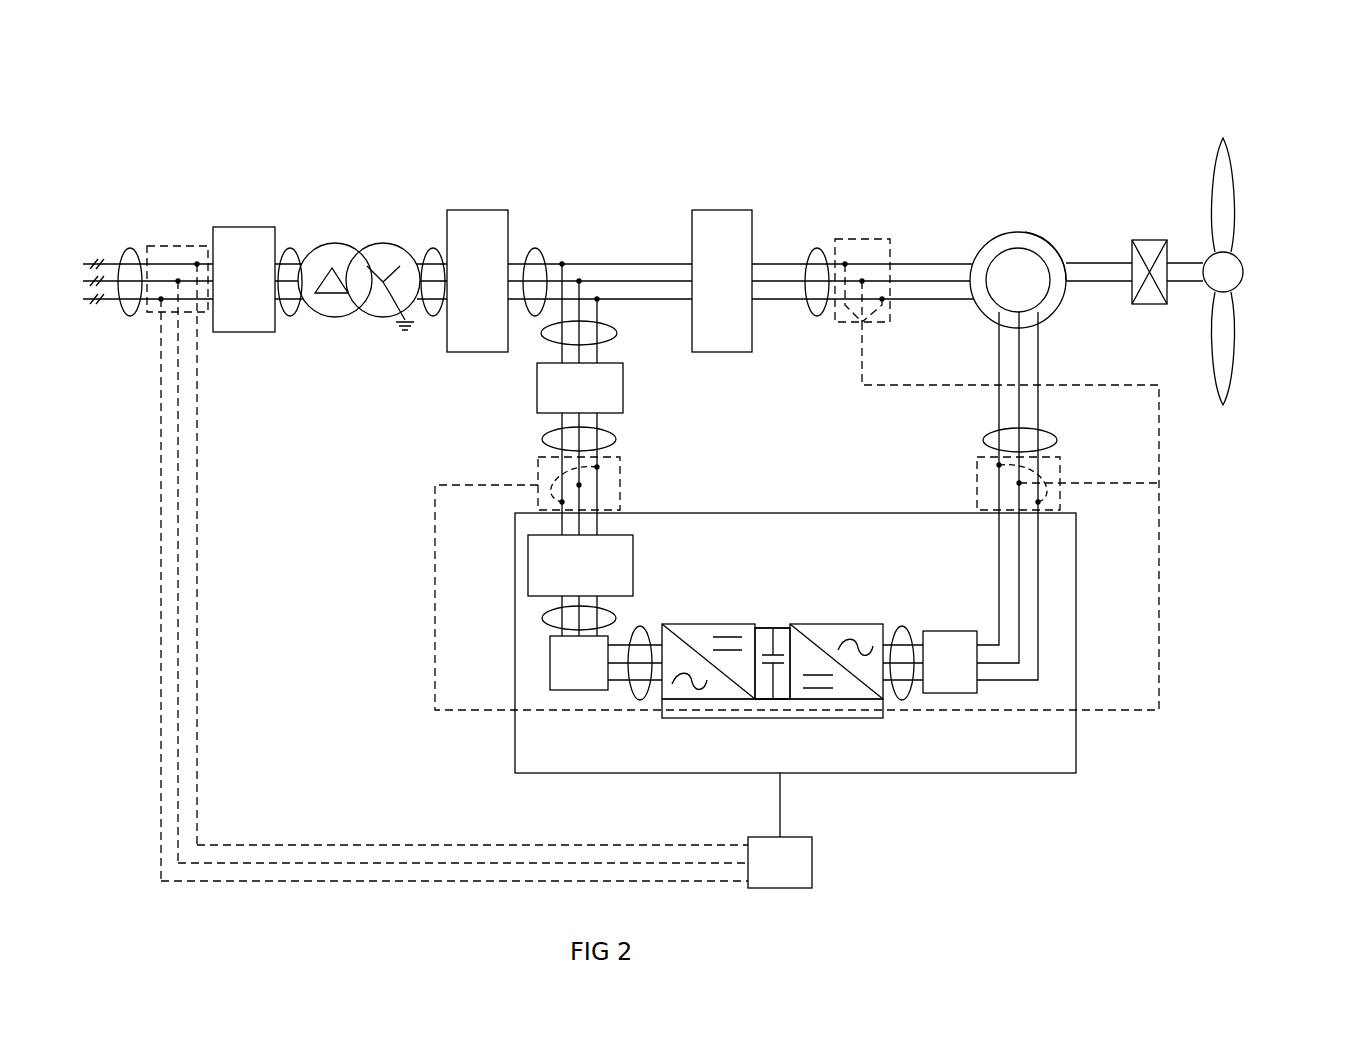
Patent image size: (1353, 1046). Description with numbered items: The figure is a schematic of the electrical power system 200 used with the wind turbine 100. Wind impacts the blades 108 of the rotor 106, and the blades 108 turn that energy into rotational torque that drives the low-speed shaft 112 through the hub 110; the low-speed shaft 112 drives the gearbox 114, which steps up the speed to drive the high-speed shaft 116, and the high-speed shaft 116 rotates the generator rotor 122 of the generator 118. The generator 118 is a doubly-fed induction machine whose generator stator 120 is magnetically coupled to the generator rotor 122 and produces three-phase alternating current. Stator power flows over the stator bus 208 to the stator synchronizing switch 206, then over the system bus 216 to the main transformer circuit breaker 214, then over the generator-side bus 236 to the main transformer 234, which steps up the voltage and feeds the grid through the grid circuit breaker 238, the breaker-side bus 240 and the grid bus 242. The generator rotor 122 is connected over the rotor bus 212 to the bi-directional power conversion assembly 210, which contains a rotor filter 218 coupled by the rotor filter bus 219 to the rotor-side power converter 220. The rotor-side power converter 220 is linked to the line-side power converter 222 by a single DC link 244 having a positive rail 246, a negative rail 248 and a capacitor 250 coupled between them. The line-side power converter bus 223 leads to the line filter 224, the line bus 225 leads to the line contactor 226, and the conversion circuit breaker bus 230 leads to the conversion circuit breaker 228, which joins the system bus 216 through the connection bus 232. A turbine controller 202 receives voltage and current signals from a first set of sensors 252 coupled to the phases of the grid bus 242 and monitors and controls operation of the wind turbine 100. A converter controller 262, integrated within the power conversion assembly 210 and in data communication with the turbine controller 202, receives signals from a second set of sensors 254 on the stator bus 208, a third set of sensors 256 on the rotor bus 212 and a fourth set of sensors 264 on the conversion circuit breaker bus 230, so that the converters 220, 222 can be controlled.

The wind turbine 100 is at (1210, 118).
The rotor 106 is at (1252, 245).
The blades 108 is at (1238, 200).
The hub 110 is at (1243, 270).
The low-speed shaft 112 is at (1185, 263).
The gearbox 114 is at (1143, 240).
The high-speed shaft 116 is at (1097, 263).
The generator 118 is at (1021, 195).
The generator stator 120 is at (1020, 232).
The generator rotor 122 is at (1010, 255).
The electrical power system 200 is at (185, 100).
The turbine controller 202 is at (801, 879).
The stator synchronizing switch 206 is at (725, 210).
The stator bus 208 is at (815, 248).
The power conversion assembly 210 is at (1077, 640).
The rotor bus 212 is at (1060, 440).
The main transformer circuit breaker 214 is at (480, 210).
The system bus 216 is at (537, 248).
The rotor filter 218 is at (945, 638).
The rotor filter bus 219 is at (902, 628).
The rotor-side power converter 220 is at (885, 700).
The line-side power converter 222 is at (662, 700).
The line-side power converter bus 223 is at (645, 630).
The line filter 224 is at (549, 663).
The line bus 225 is at (545, 618).
The line contactor 226 is at (528, 562).
The conversion circuit breaker 228 is at (623, 393).
The conversion circuit breaker bus 230 is at (616, 439).
The connection bus 232 is at (610, 340).
The main transformer 234 is at (378, 243).
The generator-side bus 236 is at (433, 240).
The grid circuit breaker 238 is at (240, 227).
The breaker-side bus 240 is at (290, 250).
The grid bus 242 is at (135, 250).
The DC link 244 is at (757, 580).
The positive rail 246 is at (783, 630).
The negative rail 248 is at (790, 700).
The capacitor 250 is at (770, 645).
The first set of voltage and electric current sensors 252 is at (143, 320).
The second set of voltage and electric current sensors 254 is at (877, 225).
The third set of voltage and electric current sensors 256 is at (963, 481).
The converter controller 262 is at (840, 708).
The fourth set of voltage and electric current sensors 264 is at (620, 488).